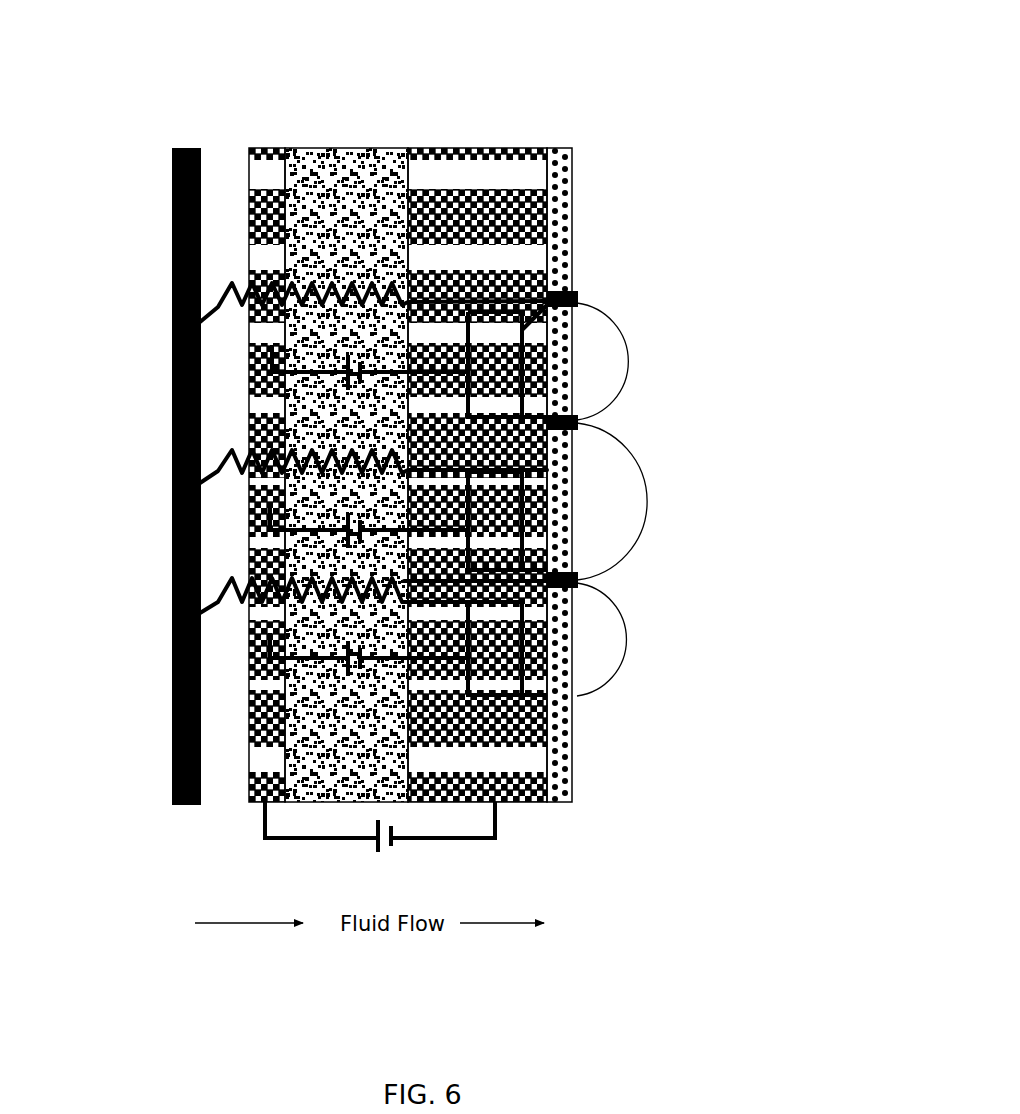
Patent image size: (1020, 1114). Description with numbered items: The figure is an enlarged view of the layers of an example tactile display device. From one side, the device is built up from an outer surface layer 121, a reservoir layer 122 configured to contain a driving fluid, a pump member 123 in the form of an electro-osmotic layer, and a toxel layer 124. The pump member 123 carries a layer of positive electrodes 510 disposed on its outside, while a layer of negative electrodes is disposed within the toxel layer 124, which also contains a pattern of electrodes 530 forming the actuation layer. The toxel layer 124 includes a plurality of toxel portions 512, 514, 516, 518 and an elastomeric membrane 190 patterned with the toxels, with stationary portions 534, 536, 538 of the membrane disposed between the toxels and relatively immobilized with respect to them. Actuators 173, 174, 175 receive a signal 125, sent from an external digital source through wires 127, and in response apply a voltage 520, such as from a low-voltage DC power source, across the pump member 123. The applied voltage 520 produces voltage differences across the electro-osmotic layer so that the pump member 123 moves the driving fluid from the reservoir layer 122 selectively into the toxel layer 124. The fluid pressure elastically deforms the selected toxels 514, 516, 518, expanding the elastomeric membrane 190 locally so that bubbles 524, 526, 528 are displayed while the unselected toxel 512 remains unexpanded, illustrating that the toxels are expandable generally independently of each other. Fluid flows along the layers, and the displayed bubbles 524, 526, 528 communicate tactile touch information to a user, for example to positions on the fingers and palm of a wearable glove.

The outer surface layer 121 is at (175, 237).
The reservoir layer 122 is at (228, 207).
The pump member 123 is at (350, 158).
The toxel layer 124 is at (493, 148).
The signal 125 is at (172, 339).
The wires 127 is at (173, 311).
The elastomeric membrane 190 is at (562, 148).
The layer of positive electrodes 510 is at (272, 165).
The toxel portion 512 is at (527, 205).
The toxel portion 514 is at (574, 360).
The toxel portion 516 is at (574, 520).
The toxel portion 518 is at (533, 643).
The voltage 520 is at (268, 378).
The displayed toxel bubble 524 is at (607, 337).
The displayed toxel bubble 526 is at (657, 497).
The displayed toxel bubble 528 is at (600, 651).
The pattern of electrodes 530 is at (467, 215).
The stationary portion 534 is at (579, 301).
The stationary portion 536 is at (578, 420).
The stationary portion 538 is at (578, 580).
The actuator 173 is at (579, 296).
The actuator 174 is at (574, 488).
The actuator 175 is at (574, 622).